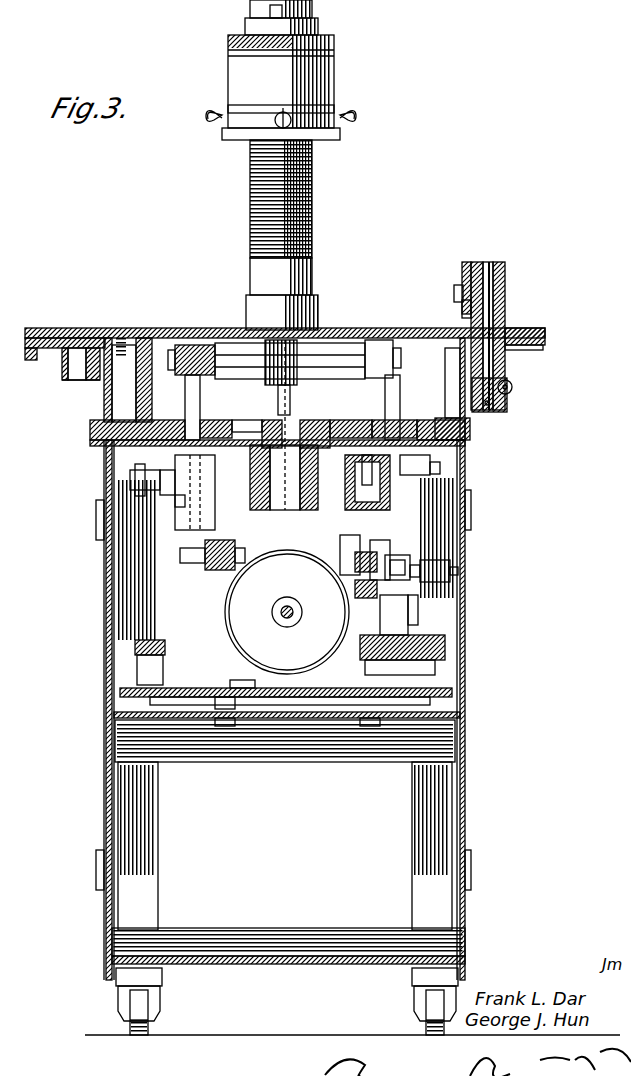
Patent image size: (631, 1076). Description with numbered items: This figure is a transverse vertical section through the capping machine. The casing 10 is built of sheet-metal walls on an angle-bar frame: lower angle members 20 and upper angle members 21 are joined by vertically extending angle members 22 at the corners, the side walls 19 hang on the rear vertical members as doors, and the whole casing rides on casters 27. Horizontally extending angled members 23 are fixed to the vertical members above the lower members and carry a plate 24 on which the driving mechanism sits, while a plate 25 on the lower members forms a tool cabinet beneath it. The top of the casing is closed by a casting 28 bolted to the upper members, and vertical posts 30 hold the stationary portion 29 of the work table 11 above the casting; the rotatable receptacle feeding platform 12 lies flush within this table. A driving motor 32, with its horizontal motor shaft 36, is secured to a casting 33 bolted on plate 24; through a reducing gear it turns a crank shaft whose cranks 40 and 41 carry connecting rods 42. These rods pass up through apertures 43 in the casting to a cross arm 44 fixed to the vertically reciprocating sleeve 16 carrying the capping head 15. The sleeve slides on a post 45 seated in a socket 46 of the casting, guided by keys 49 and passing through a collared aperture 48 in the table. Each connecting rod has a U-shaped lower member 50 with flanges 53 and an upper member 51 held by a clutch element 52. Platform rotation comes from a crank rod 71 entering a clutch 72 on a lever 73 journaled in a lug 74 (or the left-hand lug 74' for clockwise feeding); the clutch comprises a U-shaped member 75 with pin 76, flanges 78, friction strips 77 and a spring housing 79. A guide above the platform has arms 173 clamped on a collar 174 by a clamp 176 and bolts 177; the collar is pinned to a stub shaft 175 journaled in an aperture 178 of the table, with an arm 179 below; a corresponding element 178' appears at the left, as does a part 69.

The casing 10 is at (466, 598).
The work table 11 is at (510, 328).
The receptacle feeding platform 12 is at (195, 330).
The capping head 15 is at (324, 95).
The vertically reciprocating sleeve 16 is at (310, 214).
The side walls 19 is at (110, 672).
The lower angle members 20 is at (330, 935).
The upper angle members 21 is at (468, 446).
The vertically extending angle members 22 is at (108, 822).
The horizontally extending angled members 23 is at (215, 740).
The plate 24 is at (310, 722).
The plate 25 is at (225, 957).
The casters 27 is at (132, 1018).
The casting 28 is at (472, 425).
The stationary portion of the work table 29 is at (100, 328).
The vertical posts 30 is at (112, 395).
The driving motor 32 is at (236, 612).
The casting 33 is at (200, 690).
The motor shaft 36 is at (287, 628).
The crank 40 is at (345, 545).
The crank 41 is at (210, 572).
The connecting rods 42 is at (375, 402).
The apertures 43 is at (203, 422).
The cross arm 44 is at (358, 343).
The post 45 is at (306, 410).
The socket 46 is at (262, 448).
The collared aperture 48 is at (320, 330).
The keys 49 is at (282, 395).
The lower member 50 is at (200, 500).
The upper member 51 is at (186, 398).
The clutch element 52 is at (165, 472).
The flanges 53 is at (178, 505).
The housing 69 is at (385, 455).
The crank rod 71 is at (395, 568).
The clutch 72 is at (425, 595).
The lever 73 is at (380, 620).
The lug 74 is at (285, 517).
The journaled lug 74' is at (285, 517).
The U-shaped member 75 is at (360, 565).
The pin 76 is at (372, 595).
The friction strip 77 is at (460, 571).
The flanges 78 is at (390, 555).
The spring housing 79 is at (438, 571).
The projecting arms 173 is at (468, 272).
The collar 174 is at (506, 283).
The stub shaft 175 is at (490, 270).
The clamp 176 is at (462, 306).
The bolts 177 is at (455, 290).
The aperture 178 is at (554, 348).
The arm 178' is at (52, 368).
The arm 179 is at (470, 383).